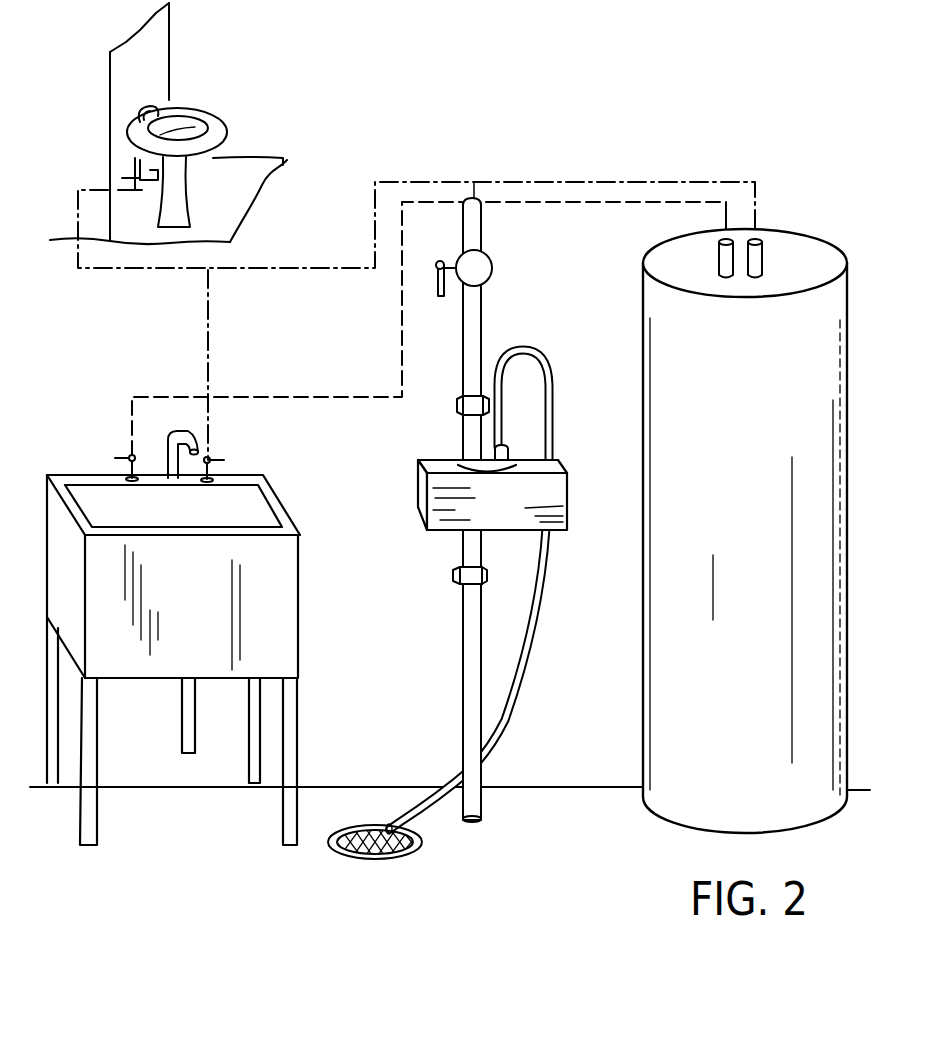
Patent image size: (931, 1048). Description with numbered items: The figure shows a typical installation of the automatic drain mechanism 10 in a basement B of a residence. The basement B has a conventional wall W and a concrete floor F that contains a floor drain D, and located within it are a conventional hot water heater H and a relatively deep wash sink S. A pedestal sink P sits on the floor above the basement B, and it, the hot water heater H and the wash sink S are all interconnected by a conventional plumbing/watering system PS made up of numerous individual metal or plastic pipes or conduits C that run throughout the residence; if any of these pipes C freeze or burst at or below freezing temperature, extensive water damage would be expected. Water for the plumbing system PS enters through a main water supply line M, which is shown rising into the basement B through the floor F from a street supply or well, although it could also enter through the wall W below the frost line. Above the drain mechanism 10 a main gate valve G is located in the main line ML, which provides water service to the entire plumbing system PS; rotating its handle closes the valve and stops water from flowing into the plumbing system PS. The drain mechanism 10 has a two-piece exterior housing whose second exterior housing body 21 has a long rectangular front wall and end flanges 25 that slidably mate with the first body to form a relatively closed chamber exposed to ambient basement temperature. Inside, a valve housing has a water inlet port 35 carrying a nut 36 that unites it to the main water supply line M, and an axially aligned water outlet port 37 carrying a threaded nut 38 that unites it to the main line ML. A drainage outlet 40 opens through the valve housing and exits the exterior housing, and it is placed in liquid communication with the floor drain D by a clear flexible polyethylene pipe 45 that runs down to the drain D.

The pedestal sink P is at (212, 130).
The plumbing/watering system PS is at (273, 265).
The basement B is at (106, 351).
The pipes or conduits C is at (343, 275).
The wall W is at (376, 533).
The wash sink S is at (200, 600).
The floor F is at (536, 852).
The floor drain D is at (372, 857).
The hot water heater H is at (755, 479).
The main gate valve G is at (490, 267).
The main line ML is at (487, 311).
The main water supply line M is at (465, 692).
The threaded nut 38 is at (460, 400).
The water outlet port 37 is at (462, 437).
The drainage outlet 40 is at (505, 448).
The second exterior housing body 21 is at (552, 501).
The end flanges 25 is at (419, 467).
The water inlet port 35 is at (470, 549).
The nut 36 is at (482, 579).
The automatic drain mechanism 10 is at (413, 552).
The clear flexible polyethylene pipe 45 is at (497, 714).